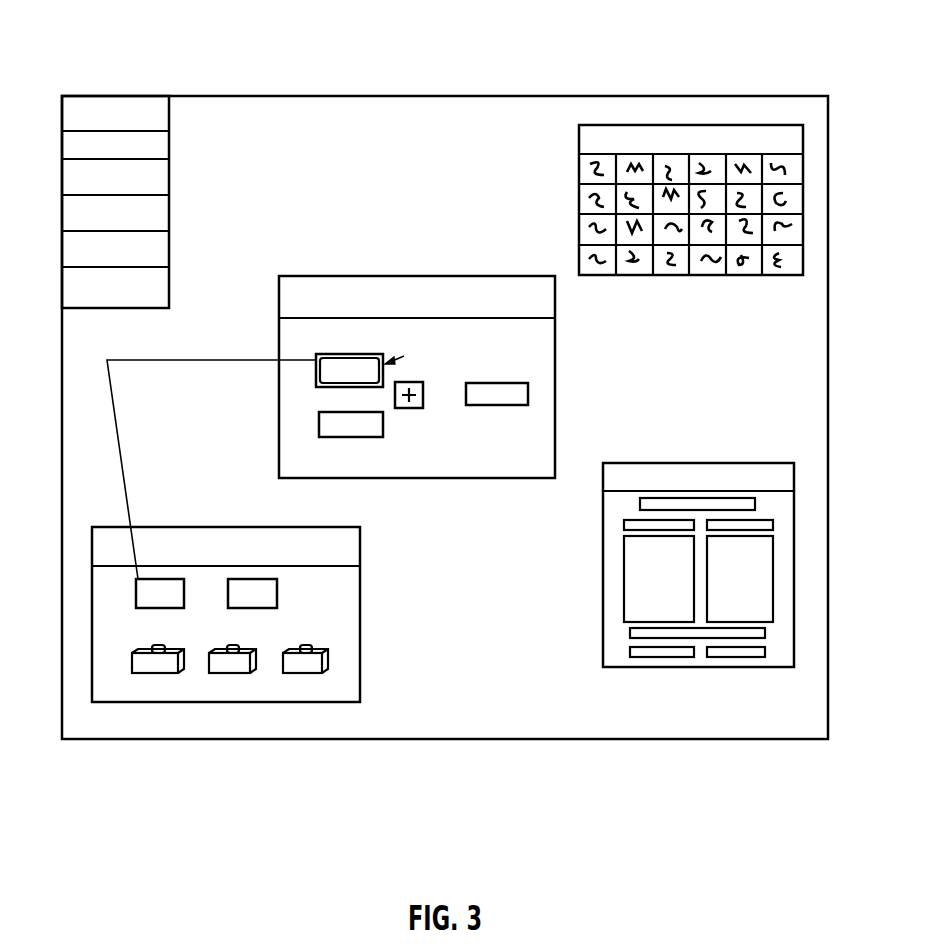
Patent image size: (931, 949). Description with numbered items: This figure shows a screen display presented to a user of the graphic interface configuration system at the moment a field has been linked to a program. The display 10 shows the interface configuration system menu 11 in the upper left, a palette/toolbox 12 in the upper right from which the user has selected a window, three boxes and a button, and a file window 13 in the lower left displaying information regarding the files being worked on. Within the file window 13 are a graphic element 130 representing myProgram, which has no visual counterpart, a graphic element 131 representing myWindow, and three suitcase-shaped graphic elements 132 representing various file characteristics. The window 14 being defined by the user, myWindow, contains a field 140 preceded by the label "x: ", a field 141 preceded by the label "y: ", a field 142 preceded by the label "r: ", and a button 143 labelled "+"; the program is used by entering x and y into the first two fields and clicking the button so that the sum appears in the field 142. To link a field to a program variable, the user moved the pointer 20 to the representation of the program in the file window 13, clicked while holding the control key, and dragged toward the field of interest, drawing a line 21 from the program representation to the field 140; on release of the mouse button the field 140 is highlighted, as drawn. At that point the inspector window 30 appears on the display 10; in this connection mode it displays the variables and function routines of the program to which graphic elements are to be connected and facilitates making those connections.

The display 10 is at (603, 66).
The interface configuration system menu 11 is at (170, 203).
The palette/toolbox 12 is at (716, 276).
The file window 13 is at (272, 527).
The window 14 is at (279, 333).
The pointer 20 is at (402, 351).
The line 21 is at (118, 440).
The inspector window 30 is at (603, 512).
The graphic element 130 is at (135, 582).
The graphic element 131 is at (278, 602).
The graphic elements 132 is at (132, 675).
The field 140 is at (344, 353).
The field 141 is at (352, 438).
The field 142 is at (492, 383).
The button 143 is at (410, 382).